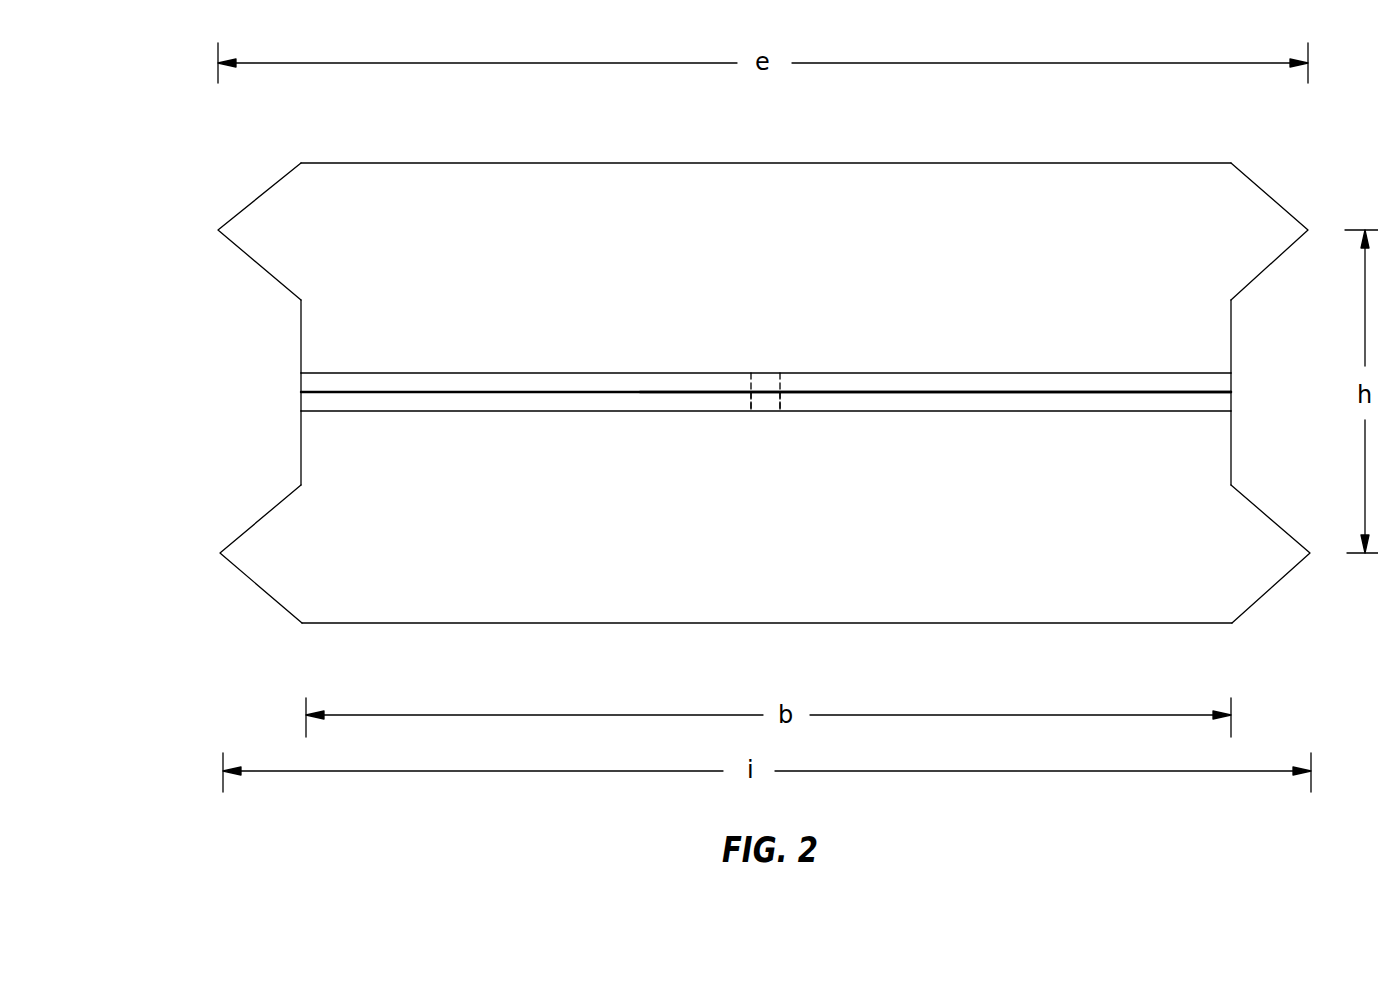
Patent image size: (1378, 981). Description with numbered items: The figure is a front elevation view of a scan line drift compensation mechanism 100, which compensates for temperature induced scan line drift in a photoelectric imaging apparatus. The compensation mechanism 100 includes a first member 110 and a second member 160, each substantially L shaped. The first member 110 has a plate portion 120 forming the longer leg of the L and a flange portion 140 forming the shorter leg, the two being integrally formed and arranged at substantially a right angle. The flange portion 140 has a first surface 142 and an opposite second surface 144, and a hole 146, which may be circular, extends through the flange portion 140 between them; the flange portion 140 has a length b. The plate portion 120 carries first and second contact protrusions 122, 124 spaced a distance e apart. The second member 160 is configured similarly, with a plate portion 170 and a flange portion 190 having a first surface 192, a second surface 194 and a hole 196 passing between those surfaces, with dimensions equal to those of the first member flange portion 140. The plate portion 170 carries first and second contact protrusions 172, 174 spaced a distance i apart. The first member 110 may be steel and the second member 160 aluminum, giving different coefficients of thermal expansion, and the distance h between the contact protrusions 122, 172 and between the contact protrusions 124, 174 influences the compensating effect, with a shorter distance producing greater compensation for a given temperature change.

The scan line drift compensation mechanism 100 is at (152, 83).
The first member 110 is at (941, 131).
The first member plate portion 120 is at (450, 173).
The first contact protrusion 122 is at (218, 230).
The second contact protrusion 124 is at (1308, 230).
The first member flange portion 140 is at (423, 382).
The first surface 142 is at (550, 372).
The second surface 144 is at (621, 393).
The hole 146 is at (763, 373).
The second member 160 is at (947, 655).
The second member plate portion 170 is at (455, 613).
The first contact protrusion 172 is at (220, 553).
The second contact protrusion 174 is at (1310, 553).
The second member flange portion 190 is at (482, 403).
The first surface 192 is at (920, 413).
The second surface 194 is at (1026, 392).
The hole 196 is at (765, 410).